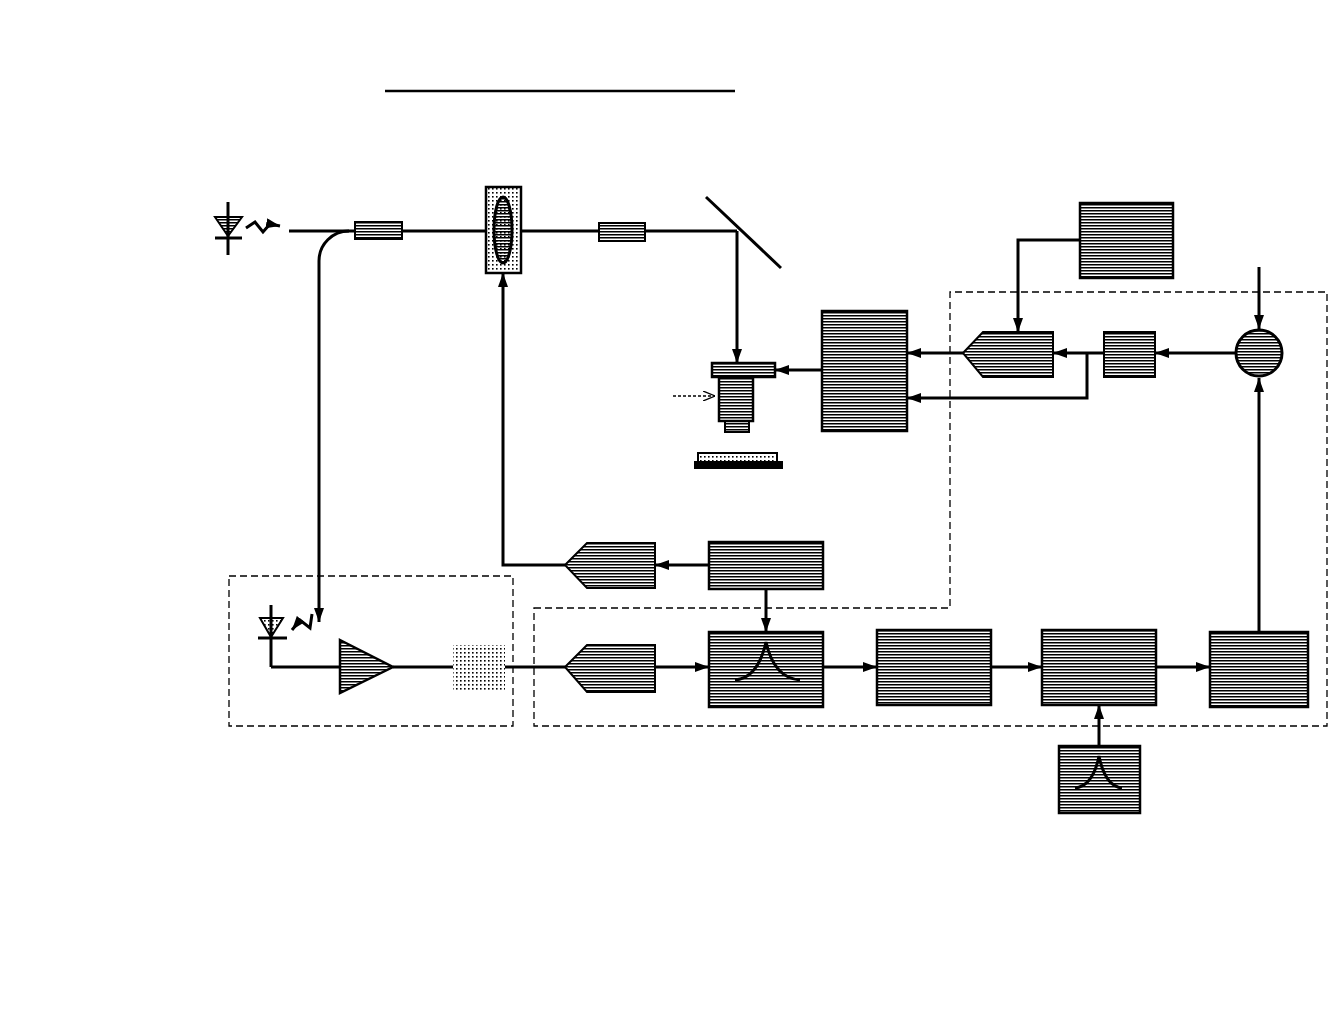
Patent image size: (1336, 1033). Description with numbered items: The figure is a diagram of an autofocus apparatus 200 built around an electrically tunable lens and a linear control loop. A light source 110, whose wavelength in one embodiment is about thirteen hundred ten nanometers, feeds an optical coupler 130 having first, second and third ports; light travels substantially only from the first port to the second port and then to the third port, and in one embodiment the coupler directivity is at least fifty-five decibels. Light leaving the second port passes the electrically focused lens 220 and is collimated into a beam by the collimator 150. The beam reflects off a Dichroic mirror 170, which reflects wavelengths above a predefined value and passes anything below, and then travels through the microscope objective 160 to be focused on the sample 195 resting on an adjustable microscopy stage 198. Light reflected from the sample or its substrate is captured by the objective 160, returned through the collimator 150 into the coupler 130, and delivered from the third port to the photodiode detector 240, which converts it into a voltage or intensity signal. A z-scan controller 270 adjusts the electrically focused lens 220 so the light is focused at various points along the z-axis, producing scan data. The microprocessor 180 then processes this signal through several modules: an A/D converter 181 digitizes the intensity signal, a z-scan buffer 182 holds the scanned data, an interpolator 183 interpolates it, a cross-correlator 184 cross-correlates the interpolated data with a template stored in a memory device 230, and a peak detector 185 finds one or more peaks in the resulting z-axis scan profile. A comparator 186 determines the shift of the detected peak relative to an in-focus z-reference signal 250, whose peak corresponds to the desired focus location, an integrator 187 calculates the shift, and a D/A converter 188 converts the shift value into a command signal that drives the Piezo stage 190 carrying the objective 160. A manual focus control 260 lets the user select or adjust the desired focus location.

The light source 110 is at (213, 230).
The optical coupler 130 is at (381, 243).
The collimator 150 is at (622, 221).
The microscope objective 160 is at (670, 389).
The Dichroic mirror 170 is at (752, 232).
The microprocessor 180 is at (863, 727).
The A/D converter 181 is at (637, 656).
The z-scan buffer 182 is at (793, 664).
The interpolator 183 is at (959, 663).
The cross-correlator 184 is at (1126, 656).
The peak detector 185 is at (1259, 542).
The comparator 186 is at (1218, 355).
The integrator 187 is at (1104, 357).
The D/A converter 188 is at (997, 352).
The Piezo stage 190 is at (841, 357).
The sample 195 is at (793, 466).
The adjustable microscopy stage 198 is at (693, 460).
The autofocus apparatus 200 is at (722, 464).
The electrically focused lens 220 is at (482, 257).
The memory device 230 is at (1076, 759).
The photodiode detector 240 is at (298, 727).
The in-focus z-reference signal 250 is at (1268, 265).
The manual focus control 260 is at (1095, 267).
The z-scan controller 270 is at (714, 580).